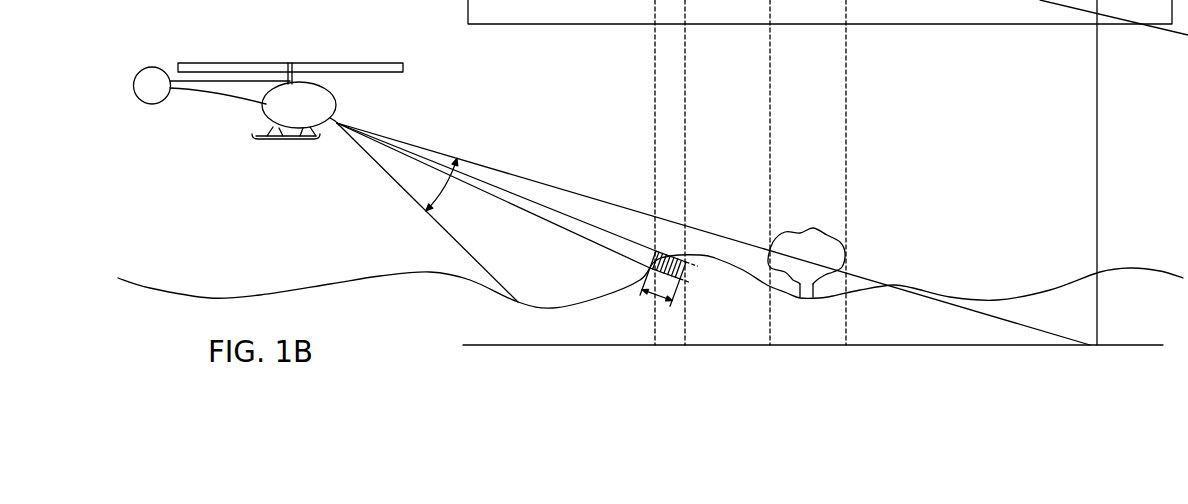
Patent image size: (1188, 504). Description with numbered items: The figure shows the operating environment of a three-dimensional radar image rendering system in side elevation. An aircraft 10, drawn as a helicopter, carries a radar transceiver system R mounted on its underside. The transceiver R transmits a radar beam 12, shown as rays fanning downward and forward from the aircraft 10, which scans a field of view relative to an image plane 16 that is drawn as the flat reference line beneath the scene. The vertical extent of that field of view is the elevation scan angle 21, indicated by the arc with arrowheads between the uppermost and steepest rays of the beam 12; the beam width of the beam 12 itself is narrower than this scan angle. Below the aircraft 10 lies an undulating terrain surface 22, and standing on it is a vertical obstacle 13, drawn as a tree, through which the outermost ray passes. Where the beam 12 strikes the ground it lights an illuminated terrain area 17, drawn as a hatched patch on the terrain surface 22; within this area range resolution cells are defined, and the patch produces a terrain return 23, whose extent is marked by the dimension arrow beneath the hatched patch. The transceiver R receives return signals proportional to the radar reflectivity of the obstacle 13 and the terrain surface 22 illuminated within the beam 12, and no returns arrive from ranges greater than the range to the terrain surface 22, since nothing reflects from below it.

The aircraft 10 is at (320, 63).
The radar transceiver system R is at (340, 121).
The radar beam 12 is at (545, 204).
The vertical obstacle 13 is at (811, 232).
The image plane 16 is at (484, 344).
The illuminated terrain area 17 is at (674, 257).
The elevation scan angle 21 is at (440, 190).
The terrain surface 22 is at (270, 294).
The terrain return 23 is at (660, 301).